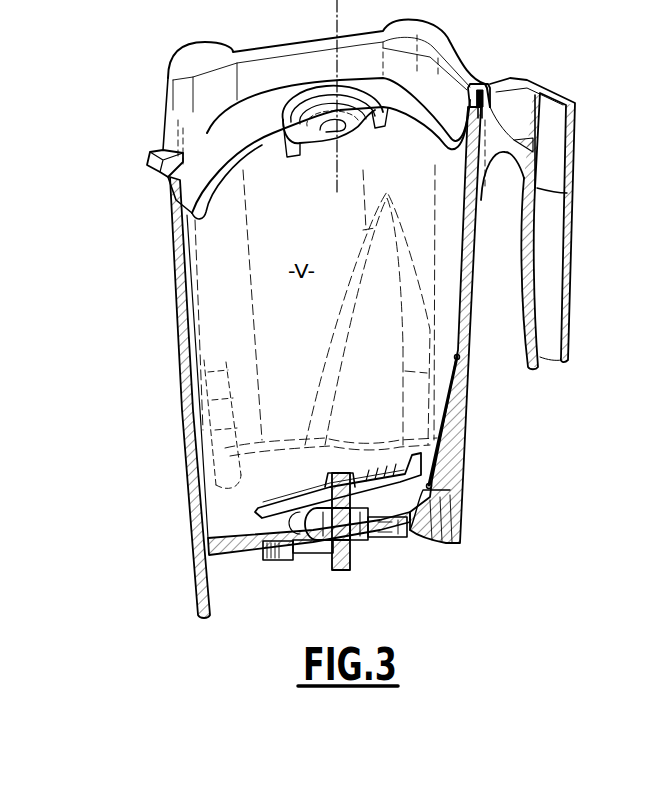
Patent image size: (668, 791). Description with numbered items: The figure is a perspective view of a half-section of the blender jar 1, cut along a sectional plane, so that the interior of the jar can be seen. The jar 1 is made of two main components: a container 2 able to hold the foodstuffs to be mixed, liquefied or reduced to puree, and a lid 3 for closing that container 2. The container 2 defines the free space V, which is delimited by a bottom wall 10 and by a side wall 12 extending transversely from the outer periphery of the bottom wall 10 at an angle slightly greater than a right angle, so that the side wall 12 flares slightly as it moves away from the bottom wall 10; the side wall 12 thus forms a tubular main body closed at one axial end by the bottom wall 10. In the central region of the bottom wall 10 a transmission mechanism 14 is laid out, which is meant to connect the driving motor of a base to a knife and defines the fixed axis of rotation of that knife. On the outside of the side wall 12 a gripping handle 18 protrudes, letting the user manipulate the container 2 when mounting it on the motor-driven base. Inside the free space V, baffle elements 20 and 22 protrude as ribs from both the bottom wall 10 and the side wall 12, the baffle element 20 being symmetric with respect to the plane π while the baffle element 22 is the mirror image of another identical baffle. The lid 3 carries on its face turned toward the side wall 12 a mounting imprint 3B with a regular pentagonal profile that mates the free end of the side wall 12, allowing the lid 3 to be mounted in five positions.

The blender jar 1 is at (86, 191).
The container 2 is at (176, 276).
The lid 3 is at (150, 170).
The mounting imprint 3B is at (517, 138).
The bottom wall 10 is at (242, 556).
The side wall 12 is at (193, 367).
The transmission mechanism 14 is at (343, 536).
The gripping handle 18 is at (575, 247).
The baffle element 20 is at (462, 430).
The baffle element 22 is at (240, 460).